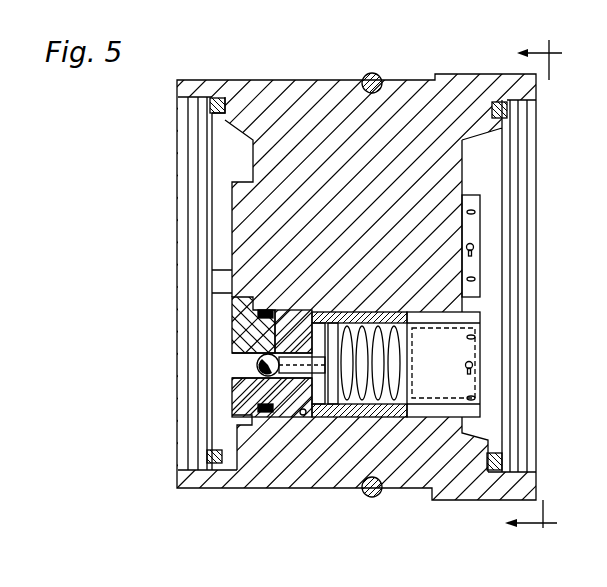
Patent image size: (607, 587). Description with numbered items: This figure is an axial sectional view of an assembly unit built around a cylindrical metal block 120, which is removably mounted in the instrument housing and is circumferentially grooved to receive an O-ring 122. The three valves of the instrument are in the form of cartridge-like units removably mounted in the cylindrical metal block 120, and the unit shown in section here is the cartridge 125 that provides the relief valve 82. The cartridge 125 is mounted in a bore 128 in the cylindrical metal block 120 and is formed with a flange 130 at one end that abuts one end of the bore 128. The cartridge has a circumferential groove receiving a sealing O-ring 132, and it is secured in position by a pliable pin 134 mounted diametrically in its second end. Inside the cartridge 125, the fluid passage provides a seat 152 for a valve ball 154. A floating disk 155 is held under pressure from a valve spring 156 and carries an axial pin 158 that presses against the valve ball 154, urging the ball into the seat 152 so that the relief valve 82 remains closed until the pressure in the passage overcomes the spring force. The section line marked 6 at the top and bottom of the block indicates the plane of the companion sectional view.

The cylindrical metal block 120 is at (399, 496).
The O-ring 122 is at (368, 492).
The cartridge 125 is at (226, 322).
The bore 128 is at (304, 416).
The flange 130 is at (236, 426).
The sealing O-ring 132 is at (268, 310).
The pliable pin 134 is at (481, 369).
The seat 152 is at (258, 358).
The valve ball 154 is at (273, 355).
The floating disk 155 is at (342, 311).
The valve spring 156 is at (396, 313).
The axial pin 158 is at (277, 413).
The relief valve 82 is at (246, 387).
The section line 6- 6 is at (533, 291).